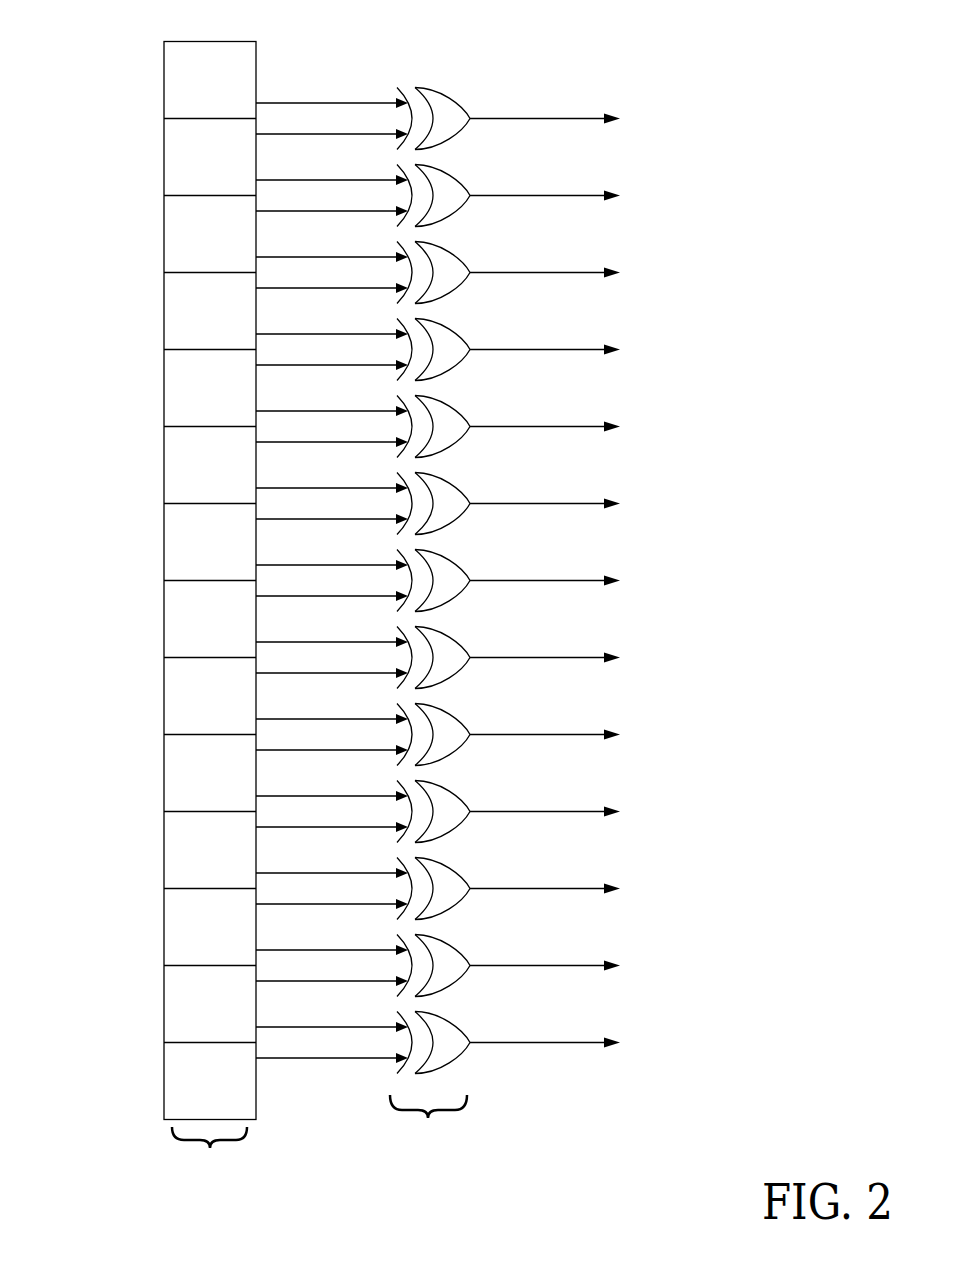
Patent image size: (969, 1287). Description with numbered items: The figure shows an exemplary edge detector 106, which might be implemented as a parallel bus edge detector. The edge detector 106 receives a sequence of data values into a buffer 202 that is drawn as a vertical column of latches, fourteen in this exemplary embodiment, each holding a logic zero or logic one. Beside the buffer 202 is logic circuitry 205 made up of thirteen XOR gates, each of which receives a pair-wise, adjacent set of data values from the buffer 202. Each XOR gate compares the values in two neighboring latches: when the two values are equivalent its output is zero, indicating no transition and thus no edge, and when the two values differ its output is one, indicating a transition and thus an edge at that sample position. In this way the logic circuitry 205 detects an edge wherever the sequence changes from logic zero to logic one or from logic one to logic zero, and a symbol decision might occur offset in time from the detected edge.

The edge detector 106 is at (812, 29).
The buffer 202 is at (194, 594).
The logic circuitry 205 is at (444, 596).